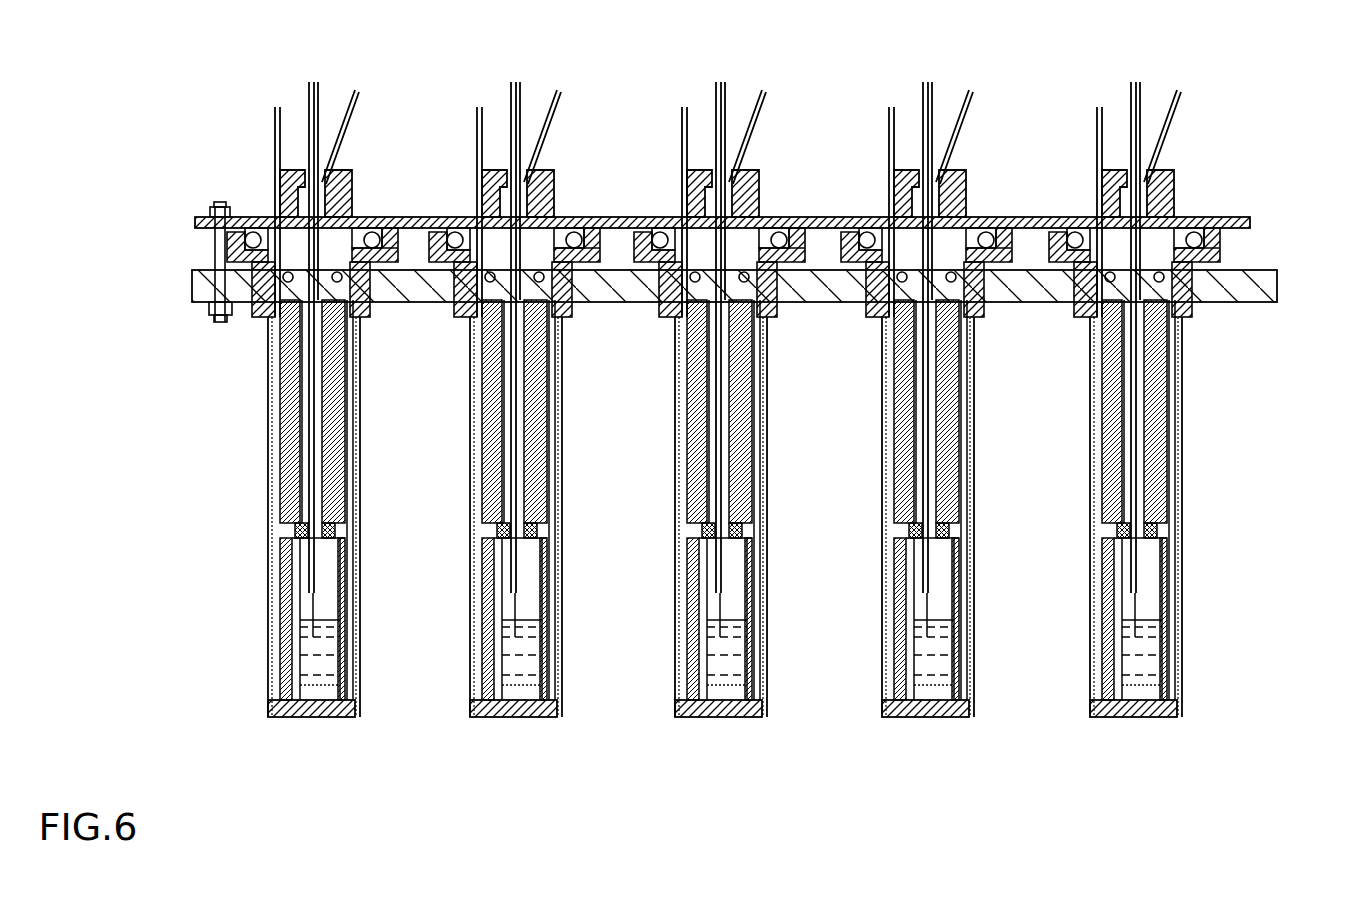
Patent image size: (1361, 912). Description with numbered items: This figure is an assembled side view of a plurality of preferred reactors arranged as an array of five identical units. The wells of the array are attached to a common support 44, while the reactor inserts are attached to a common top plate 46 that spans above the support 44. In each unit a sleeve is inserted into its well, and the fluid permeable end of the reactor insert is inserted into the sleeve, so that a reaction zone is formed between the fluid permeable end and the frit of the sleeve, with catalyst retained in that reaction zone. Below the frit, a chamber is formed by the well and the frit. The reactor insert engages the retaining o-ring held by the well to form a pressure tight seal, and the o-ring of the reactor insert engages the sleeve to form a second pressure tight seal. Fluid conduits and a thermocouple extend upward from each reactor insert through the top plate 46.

The support 44 is at (1277, 282).
The top plate 46 is at (1235, 217).